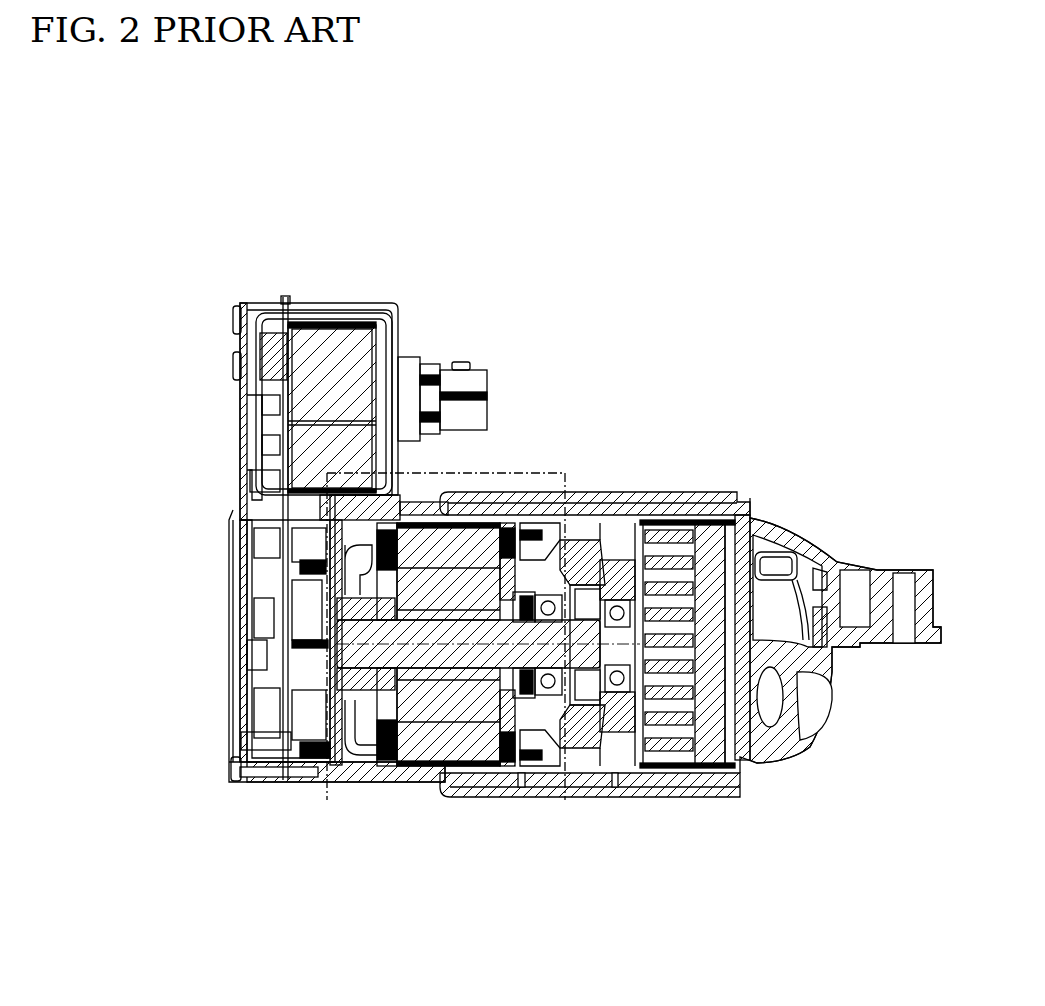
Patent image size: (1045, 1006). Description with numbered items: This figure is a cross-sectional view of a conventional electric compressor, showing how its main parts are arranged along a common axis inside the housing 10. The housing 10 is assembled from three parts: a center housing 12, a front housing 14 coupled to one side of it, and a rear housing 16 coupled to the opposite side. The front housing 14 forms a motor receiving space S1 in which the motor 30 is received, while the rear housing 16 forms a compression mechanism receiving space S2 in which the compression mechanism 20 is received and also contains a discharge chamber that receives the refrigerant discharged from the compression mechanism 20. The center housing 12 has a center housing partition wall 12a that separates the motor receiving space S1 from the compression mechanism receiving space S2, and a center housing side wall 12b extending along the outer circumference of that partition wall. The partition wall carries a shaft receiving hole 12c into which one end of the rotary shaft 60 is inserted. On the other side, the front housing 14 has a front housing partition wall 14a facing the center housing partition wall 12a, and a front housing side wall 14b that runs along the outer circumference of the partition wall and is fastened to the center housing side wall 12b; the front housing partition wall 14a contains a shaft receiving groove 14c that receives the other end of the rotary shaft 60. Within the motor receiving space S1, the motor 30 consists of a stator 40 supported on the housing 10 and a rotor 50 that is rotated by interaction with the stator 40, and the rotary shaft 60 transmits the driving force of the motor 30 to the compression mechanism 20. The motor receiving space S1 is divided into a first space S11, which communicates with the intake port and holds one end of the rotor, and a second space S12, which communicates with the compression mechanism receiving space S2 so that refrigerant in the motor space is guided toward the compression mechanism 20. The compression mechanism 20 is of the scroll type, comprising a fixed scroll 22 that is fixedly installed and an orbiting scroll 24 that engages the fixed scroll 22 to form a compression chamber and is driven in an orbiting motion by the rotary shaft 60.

The housing 10 is at (450, 200).
The center housing 12 is at (562, 493).
The center housing partition wall 12a is at (592, 798).
The center housing side wall 12b is at (541, 798).
The shaft receiving hole 12c is at (552, 798).
The front housing 14 is at (430, 492).
The front housing partition wall 14a is at (236, 750).
The front housing side wall 14b is at (356, 784).
The shaft receiving groove 14c is at (242, 654).
The rear housing 16 is at (697, 493).
The compression mechanism 20 is at (693, 865).
The fixed scroll 22 is at (703, 798).
The orbiting scroll 24 is at (643, 798).
The motor 30 is at (451, 870).
The stator 40 is at (400, 796).
The rotor 50 is at (448, 796).
The rotary shaft 60 is at (496, 798).
The motor receiving space S1 is at (857, 812).
The first space S11 is at (323, 784).
The second space S12 is at (535, 494).
The compression mechanism receiving space S2 is at (722, 494).